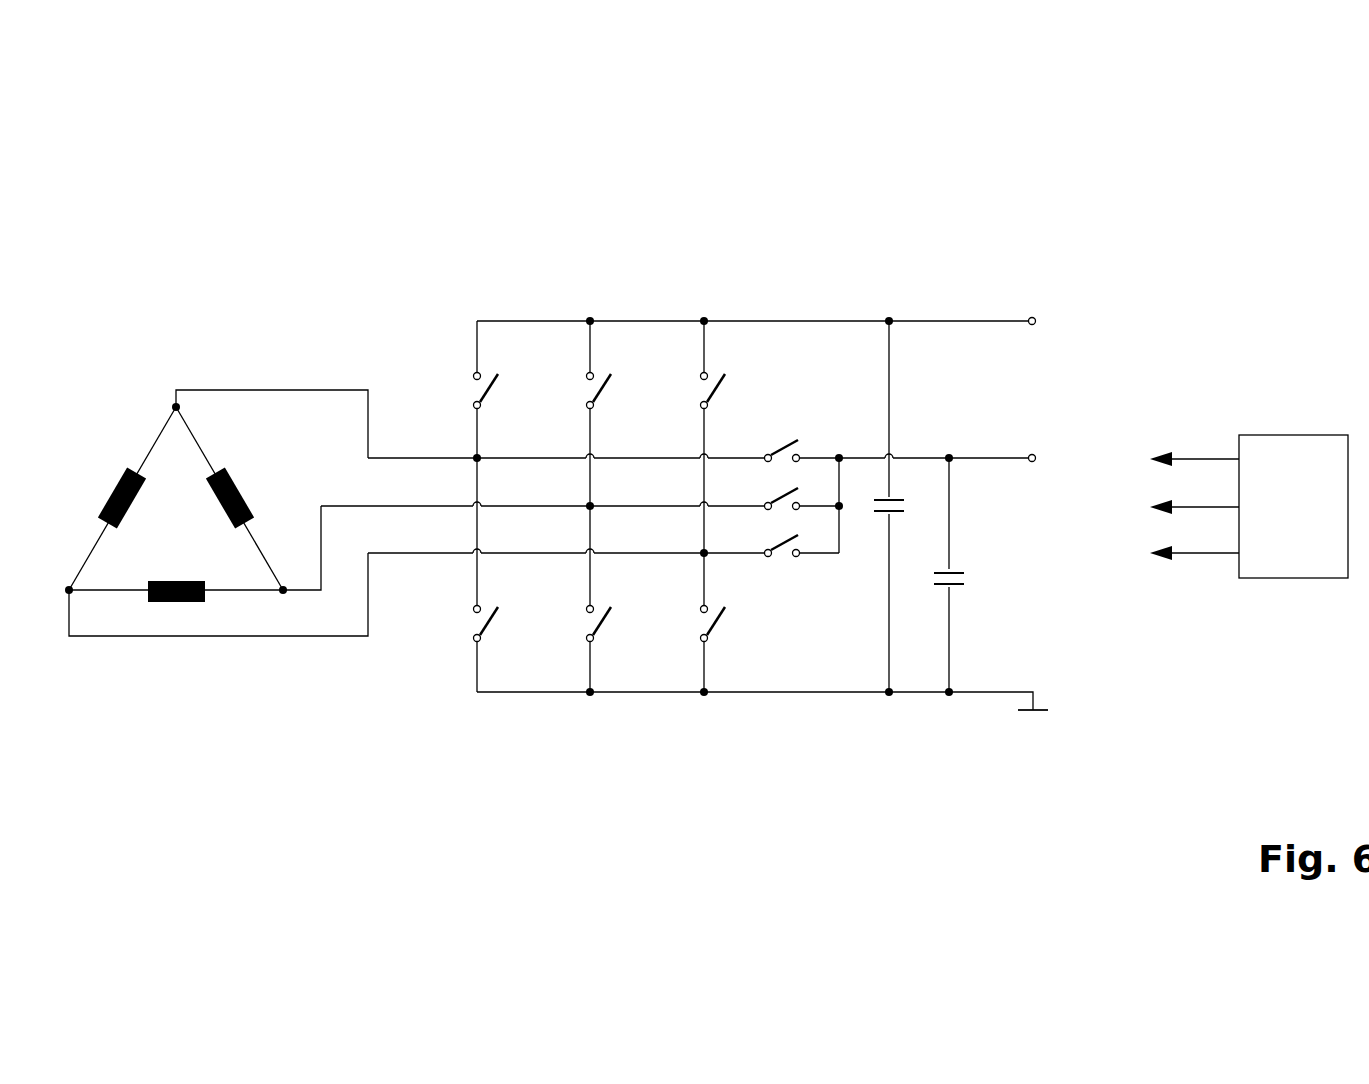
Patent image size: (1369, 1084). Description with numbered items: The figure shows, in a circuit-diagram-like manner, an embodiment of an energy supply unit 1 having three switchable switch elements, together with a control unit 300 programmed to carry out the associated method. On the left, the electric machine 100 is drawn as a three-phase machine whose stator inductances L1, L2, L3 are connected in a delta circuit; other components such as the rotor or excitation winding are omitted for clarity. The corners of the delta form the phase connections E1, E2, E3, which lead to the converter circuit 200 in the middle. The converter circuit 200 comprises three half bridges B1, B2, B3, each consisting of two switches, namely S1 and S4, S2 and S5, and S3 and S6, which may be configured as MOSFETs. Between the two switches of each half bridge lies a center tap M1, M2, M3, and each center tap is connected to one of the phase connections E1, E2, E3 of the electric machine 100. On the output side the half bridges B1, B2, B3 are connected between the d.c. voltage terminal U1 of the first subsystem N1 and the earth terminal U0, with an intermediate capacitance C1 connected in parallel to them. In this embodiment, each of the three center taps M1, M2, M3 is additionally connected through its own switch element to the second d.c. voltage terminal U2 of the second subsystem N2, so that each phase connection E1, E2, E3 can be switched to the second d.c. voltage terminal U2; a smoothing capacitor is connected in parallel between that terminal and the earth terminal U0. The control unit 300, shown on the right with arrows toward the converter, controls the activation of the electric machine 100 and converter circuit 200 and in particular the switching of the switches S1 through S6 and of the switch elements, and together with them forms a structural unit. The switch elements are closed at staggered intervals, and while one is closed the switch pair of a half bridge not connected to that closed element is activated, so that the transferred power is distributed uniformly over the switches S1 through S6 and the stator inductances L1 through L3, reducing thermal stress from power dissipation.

The energy supply unit 1 is at (146, 200).
The electric machine 100 is at (181, 757).
The converter circuit 200 is at (708, 757).
The control unit 300 is at (1296, 435).
The phase connection E1 is at (174, 407).
The phase connection E2 is at (284, 588).
The phase connection E3 is at (69, 588).
The stator inductance L1 is at (238, 495).
The stator inductance L2 is at (176, 574).
The stator inductance L3 is at (111, 495).
The half bridge B1 is at (474, 284).
The half bridge B2 is at (587, 284).
The half bridge B3 is at (701, 284).
The switch S1 is at (468, 391).
The switch S2 is at (581, 391).
The switch S3 is at (695, 391).
The switch S4 is at (467, 627).
The switch S5 is at (580, 627).
The switch S6 is at (694, 627).
The center tap M1 is at (479, 460).
The center tap M2 is at (592, 508).
The center tap M3 is at (706, 555).
The intermediate capacitance C1 is at (907, 506).
The earth terminal U0 is at (1048, 696).
The d.c. voltage terminal U1 is at (1052, 326).
The second d.c. voltage terminal U2 is at (1052, 463).
The first subsystem N1 is at (1072, 323).
The second subsystem N2 is at (1072, 460).